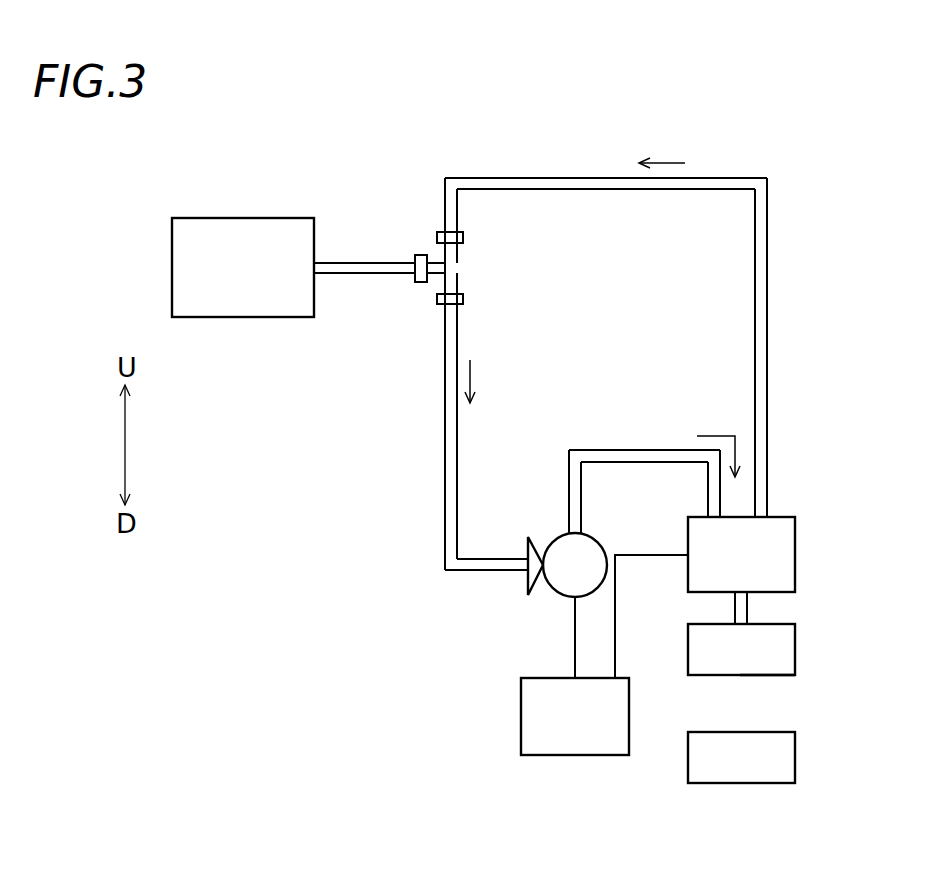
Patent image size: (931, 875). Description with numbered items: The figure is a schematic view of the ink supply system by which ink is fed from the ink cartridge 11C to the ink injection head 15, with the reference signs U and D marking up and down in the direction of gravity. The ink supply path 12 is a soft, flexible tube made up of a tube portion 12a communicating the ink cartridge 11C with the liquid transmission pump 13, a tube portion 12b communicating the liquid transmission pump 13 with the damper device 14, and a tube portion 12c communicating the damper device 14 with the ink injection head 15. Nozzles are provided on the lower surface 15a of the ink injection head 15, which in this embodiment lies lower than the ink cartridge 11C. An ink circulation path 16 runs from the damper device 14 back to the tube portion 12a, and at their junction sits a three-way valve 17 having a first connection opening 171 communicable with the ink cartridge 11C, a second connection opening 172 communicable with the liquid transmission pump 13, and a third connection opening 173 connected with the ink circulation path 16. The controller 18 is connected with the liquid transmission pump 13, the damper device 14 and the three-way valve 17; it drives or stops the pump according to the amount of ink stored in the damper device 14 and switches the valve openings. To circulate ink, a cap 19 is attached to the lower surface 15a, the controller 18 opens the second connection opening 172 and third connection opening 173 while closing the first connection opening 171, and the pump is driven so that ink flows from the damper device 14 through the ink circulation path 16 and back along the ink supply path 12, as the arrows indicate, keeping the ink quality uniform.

The ink cartridge 11C is at (245, 218).
The ink supply path 12 is at (609, 385).
The tube portion 12a is at (373, 273).
The tube portion 12b is at (646, 450).
The tube portion 12c is at (747, 615).
The liquid transmission pump 13 is at (596, 538).
The damper device 14 is at (795, 553).
The ink injection head 15 is at (795, 652).
The lower surface 15a is at (770, 675).
The ink circulation path 16 is at (732, 177).
The three-way valve 17 is at (469, 238).
The first connection opening 171 is at (420, 255).
The second connection opening 172 is at (463, 299).
The third connection opening 173 is at (463, 237).
The controller 18 is at (521, 712).
The cap 19 is at (795, 760).